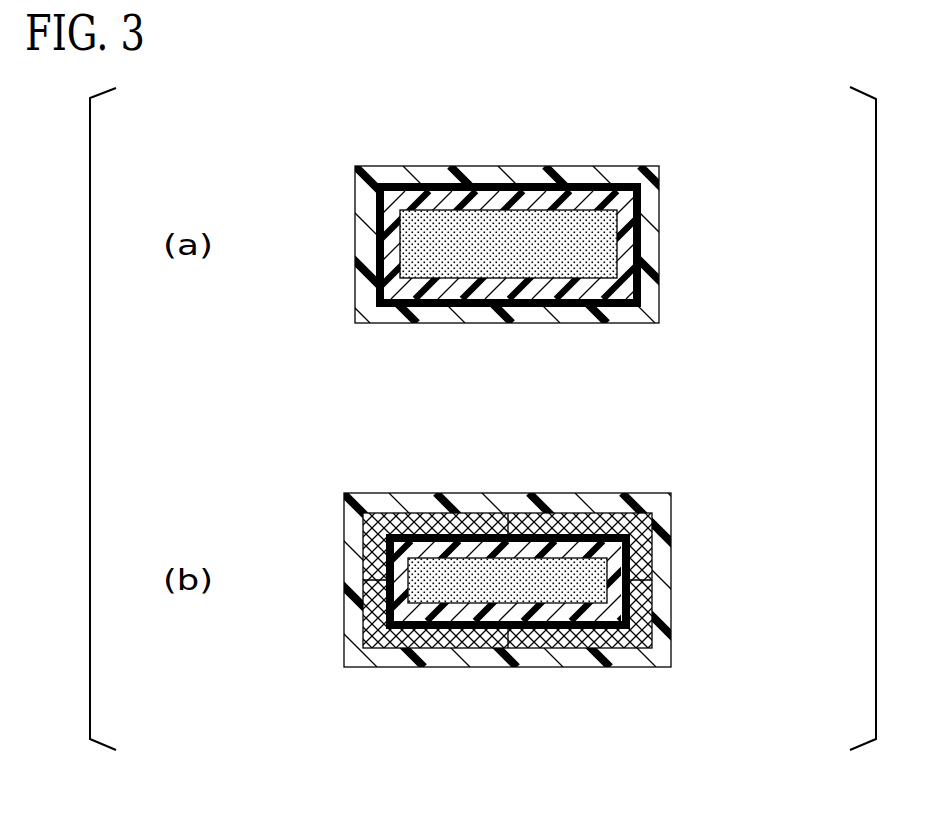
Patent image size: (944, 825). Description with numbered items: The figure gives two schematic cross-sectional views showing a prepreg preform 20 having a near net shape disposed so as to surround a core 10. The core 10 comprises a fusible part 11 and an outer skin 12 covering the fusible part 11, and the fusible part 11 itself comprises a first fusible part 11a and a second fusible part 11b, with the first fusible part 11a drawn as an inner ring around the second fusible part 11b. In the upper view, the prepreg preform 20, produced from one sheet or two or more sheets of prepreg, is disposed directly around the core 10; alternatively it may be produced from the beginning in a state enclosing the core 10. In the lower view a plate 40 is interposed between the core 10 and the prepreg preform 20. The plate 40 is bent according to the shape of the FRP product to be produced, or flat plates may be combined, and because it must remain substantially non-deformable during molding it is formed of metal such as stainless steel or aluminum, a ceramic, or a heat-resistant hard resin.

The core 10 is at (569, 421).
The fusible part 11 is at (534, 408).
The first fusible part 11a is at (625, 228).
The second fusible part 11b is at (612, 273).
The outer skin 12 is at (617, 308).
The prepreg preform 20 is at (629, 172).
The plate 40 is at (442, 513).